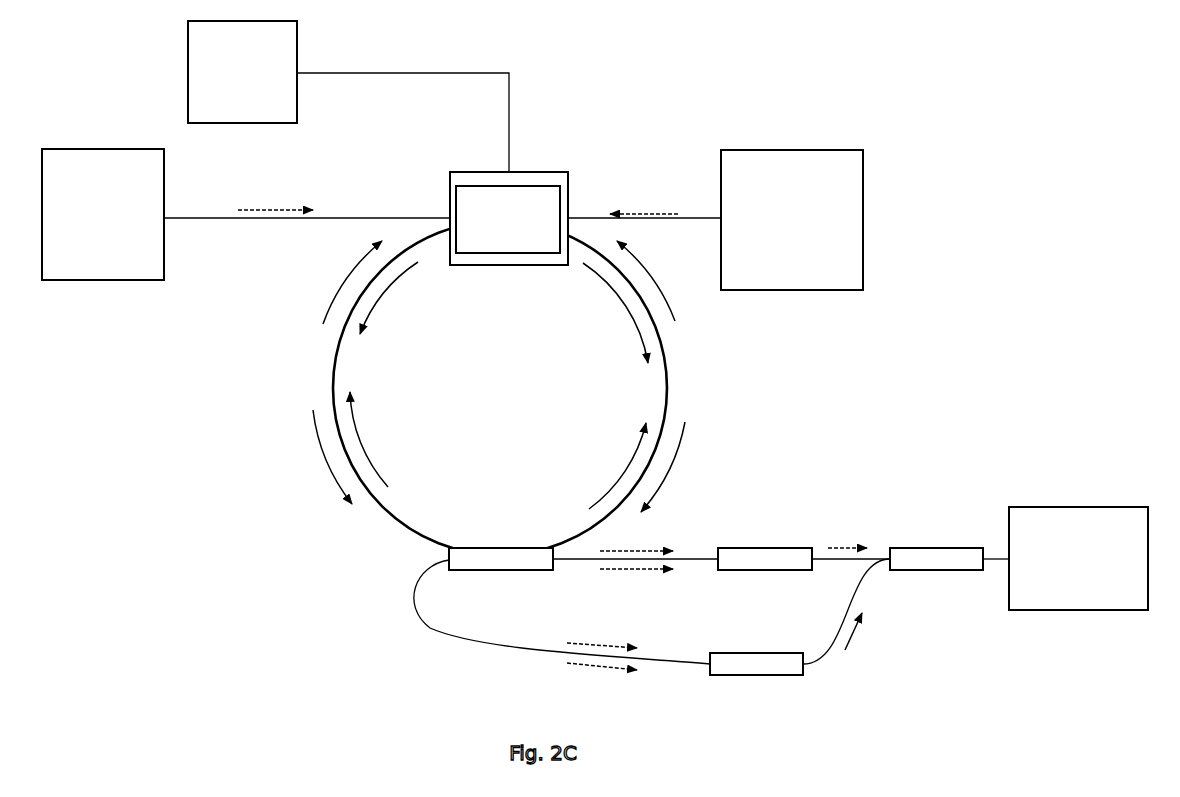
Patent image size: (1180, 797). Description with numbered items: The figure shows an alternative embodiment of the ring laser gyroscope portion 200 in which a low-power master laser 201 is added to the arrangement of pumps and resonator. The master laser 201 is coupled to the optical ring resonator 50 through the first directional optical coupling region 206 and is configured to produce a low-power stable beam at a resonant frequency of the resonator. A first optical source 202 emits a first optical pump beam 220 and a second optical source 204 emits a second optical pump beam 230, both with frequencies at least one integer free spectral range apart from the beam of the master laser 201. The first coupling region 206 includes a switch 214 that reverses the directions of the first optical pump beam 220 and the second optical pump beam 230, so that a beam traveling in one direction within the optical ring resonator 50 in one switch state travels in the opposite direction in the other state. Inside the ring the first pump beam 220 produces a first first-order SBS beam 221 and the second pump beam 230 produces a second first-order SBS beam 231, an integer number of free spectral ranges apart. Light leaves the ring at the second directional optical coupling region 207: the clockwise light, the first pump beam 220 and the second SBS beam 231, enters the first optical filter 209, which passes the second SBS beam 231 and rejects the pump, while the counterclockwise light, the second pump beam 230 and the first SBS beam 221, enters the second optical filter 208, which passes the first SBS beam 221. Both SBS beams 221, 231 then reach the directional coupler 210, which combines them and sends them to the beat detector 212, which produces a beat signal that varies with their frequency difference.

The ring laser gyroscope portion 200 is at (931, 96).
The optical ring resonator 50 is at (407, 533).
The master laser 201 is at (224, 113).
The first optical source 202 is at (85, 257).
The second optical source 204 is at (774, 260).
The first directional optical coupling region 206 is at (509, 168).
The second directional optical coupling region 207 is at (500, 570).
The second optical filter 208 is at (785, 547).
The first optical filter 209 is at (787, 677).
The directional coupler 210 is at (910, 570).
The beat detector 212 is at (1060, 600).
The switch 214 is at (491, 243).
The first optical pump beam 220 is at (285, 208).
The first first-order SBS beam 221 is at (657, 275).
The second optical pump beam 230 is at (628, 214).
The second first-order SBS beam 231 is at (337, 295).